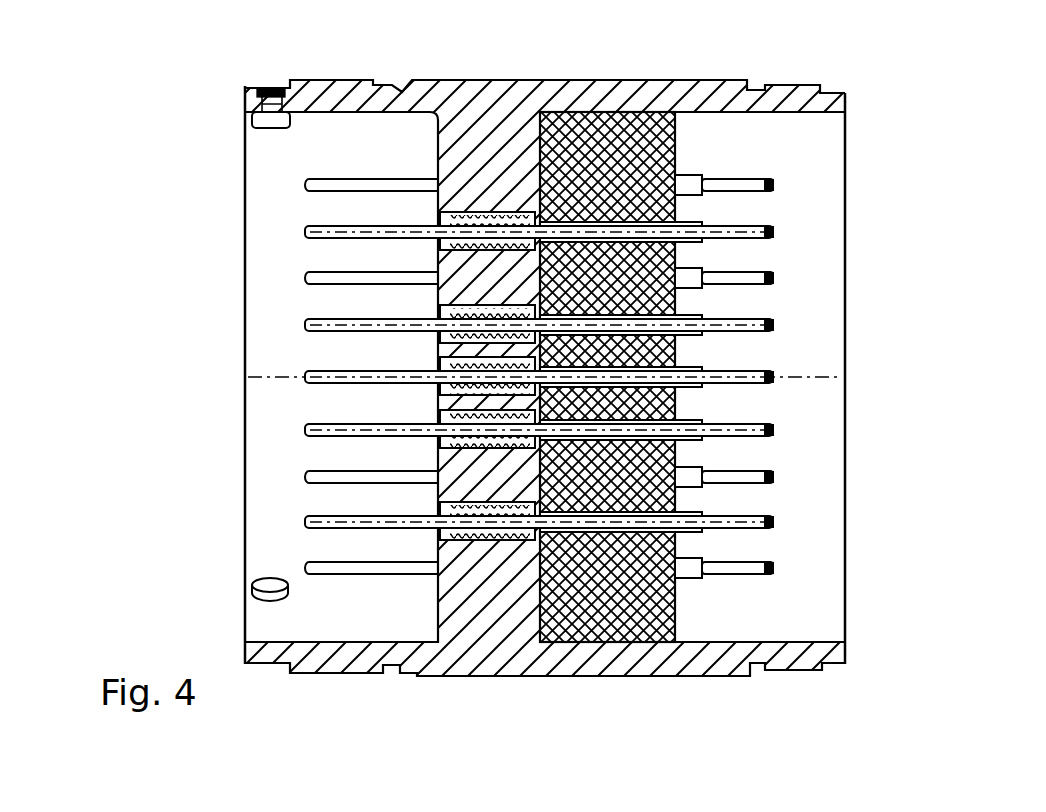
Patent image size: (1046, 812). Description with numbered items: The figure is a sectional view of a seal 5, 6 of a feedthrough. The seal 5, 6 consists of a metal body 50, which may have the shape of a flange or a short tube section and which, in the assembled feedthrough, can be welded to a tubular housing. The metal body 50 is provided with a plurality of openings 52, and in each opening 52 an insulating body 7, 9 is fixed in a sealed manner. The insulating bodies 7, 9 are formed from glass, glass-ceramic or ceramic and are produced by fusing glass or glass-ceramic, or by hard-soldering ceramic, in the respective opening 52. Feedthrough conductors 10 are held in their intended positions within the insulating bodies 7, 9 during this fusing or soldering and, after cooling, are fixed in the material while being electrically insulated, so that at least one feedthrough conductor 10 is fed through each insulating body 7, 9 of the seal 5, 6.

The seal 5 is at (512, 338).
The seal 6 is at (512, 338).
The insulating body 7 is at (432, 280).
The insulating body 9 is at (432, 280).
The feedthrough conductor 10 is at (773, 518).
The metal body 50 is at (795, 85).
The opening 52 is at (537, 207).